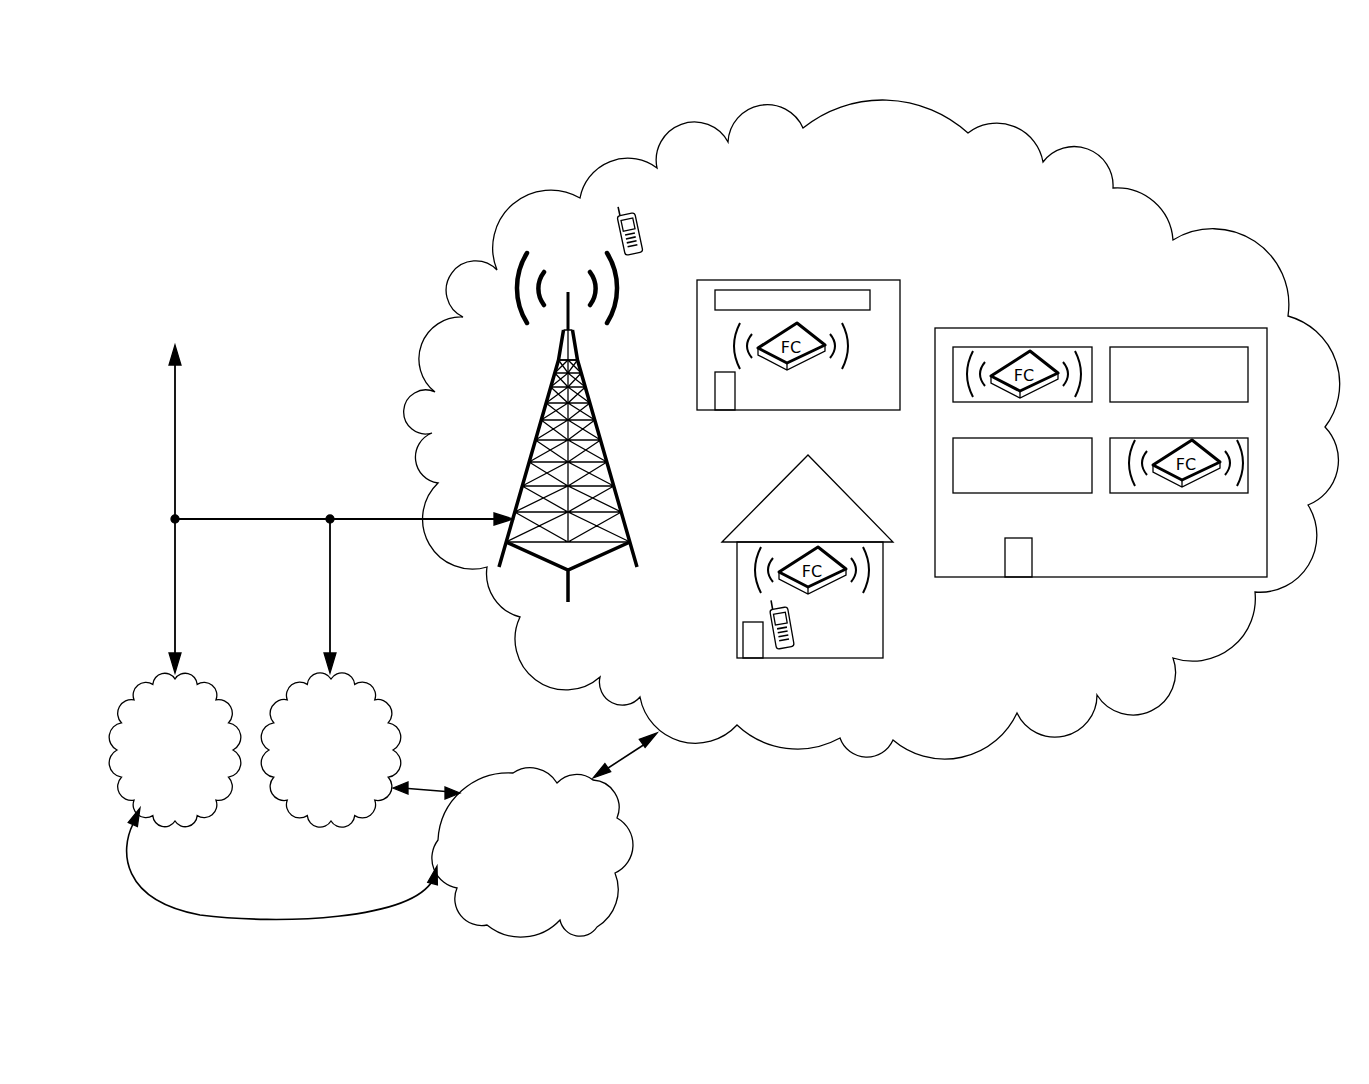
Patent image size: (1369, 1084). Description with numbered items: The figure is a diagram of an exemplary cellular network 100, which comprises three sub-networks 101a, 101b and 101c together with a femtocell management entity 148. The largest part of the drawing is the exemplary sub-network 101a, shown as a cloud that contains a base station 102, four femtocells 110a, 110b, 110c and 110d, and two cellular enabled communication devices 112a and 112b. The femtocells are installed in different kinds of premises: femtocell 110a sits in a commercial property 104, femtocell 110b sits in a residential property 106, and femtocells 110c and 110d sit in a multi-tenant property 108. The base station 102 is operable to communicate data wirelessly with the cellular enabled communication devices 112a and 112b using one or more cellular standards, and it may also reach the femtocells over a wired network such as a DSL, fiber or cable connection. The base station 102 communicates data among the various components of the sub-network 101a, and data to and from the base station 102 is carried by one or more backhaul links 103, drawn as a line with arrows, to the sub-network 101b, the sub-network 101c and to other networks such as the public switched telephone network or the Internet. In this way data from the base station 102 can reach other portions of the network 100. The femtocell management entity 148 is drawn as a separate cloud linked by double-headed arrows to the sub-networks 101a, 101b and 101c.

The cellular network 100 is at (308, 196).
The sub-network 101a is at (680, 124).
The sub-network 101b is at (175, 822).
The sub-network 101c is at (331, 822).
The base station 102 is at (588, 388).
The backhaul links 103 is at (258, 518).
The commercial property 104 is at (734, 280).
The residential property 106 is at (774, 490).
The multi-tenant property 108 is at (1267, 367).
The femtocell 110a is at (803, 362).
The femtocell 110b is at (822, 590).
The femtocell 110c is at (1040, 390).
The femtocell 110d is at (1200, 480).
The cellular enabled communication device 112a is at (636, 214).
The cellular enabled communication device 112b is at (790, 648).
The femtocell management entity 148 is at (538, 768).